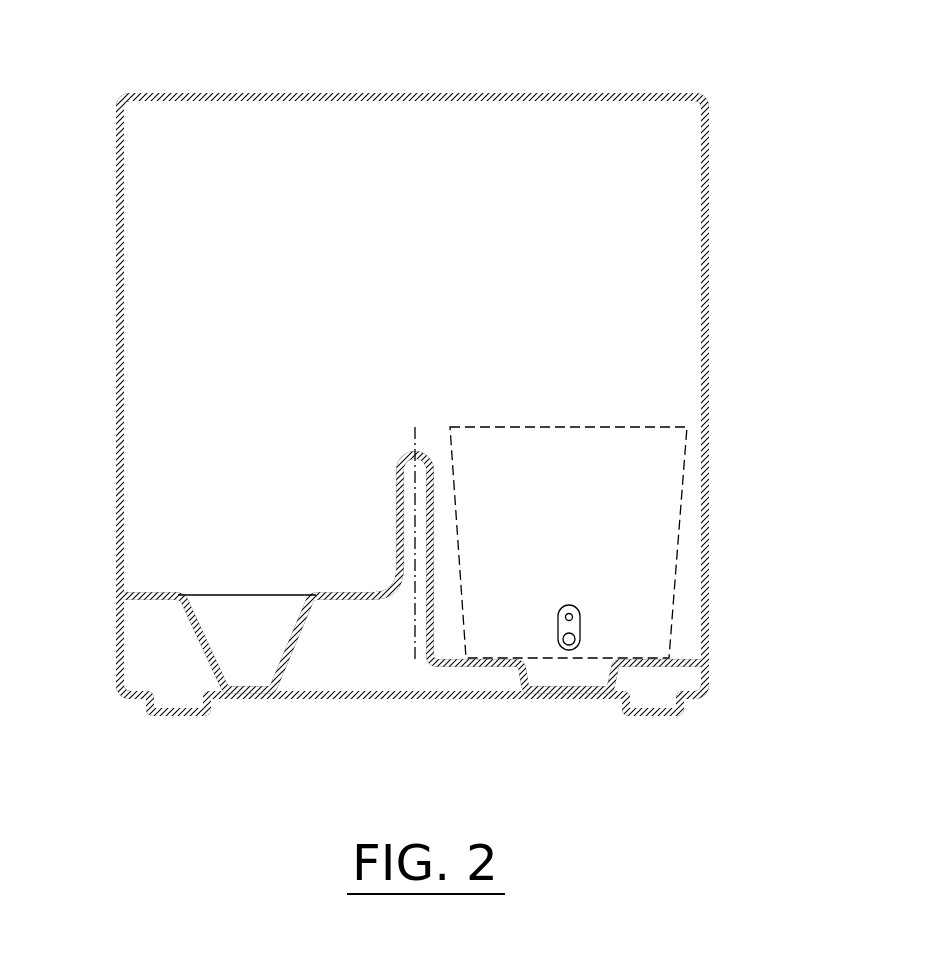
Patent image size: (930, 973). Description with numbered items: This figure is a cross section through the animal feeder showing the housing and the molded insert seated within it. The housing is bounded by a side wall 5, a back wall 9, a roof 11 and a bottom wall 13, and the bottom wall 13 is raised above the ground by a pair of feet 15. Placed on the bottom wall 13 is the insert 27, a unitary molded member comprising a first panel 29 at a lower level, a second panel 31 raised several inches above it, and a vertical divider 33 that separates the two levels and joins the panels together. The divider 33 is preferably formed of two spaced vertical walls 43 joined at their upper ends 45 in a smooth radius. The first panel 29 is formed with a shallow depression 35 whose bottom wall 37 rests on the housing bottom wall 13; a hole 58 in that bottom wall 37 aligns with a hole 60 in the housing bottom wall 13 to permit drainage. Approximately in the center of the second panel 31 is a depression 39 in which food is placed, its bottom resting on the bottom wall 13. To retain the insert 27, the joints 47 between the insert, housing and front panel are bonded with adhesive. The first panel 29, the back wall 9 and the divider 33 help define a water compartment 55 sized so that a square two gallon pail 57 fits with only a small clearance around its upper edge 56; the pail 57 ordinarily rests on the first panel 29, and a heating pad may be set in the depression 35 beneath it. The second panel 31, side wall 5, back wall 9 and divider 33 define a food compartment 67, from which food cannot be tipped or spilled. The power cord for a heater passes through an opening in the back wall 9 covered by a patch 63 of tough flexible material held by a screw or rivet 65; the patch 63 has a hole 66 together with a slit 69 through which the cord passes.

The side wall 5 is at (117, 438).
The back wall 9 is at (278, 263).
The roof 11 is at (426, 92).
The bottom wall 13 is at (355, 700).
The feet 15 is at (152, 713).
The insert 27 is at (158, 588).
The first panel 29 is at (463, 668).
The second panel 31 is at (340, 593).
The divider 33 is at (397, 487).
The shallow depression 35 is at (545, 679).
The bottom wall of the depression 37 is at (546, 697).
The depression 39 is at (253, 613).
The vertical walls 43 is at (397, 510).
The upper ends 45 is at (420, 452).
The joints 47 is at (126, 587).
The water compartment 55 is at (553, 470).
The upper edge 56 is at (657, 427).
The pail 57 is at (617, 426).
The hole 58 is at (563, 687).
The hole 60 is at (571, 692).
The patch 63 is at (577, 625).
The screw or rivet 65 is at (566, 612).
The hole 66 is at (562, 636).
The food compartment 67 is at (240, 536).
The slit 69 is at (576, 639).